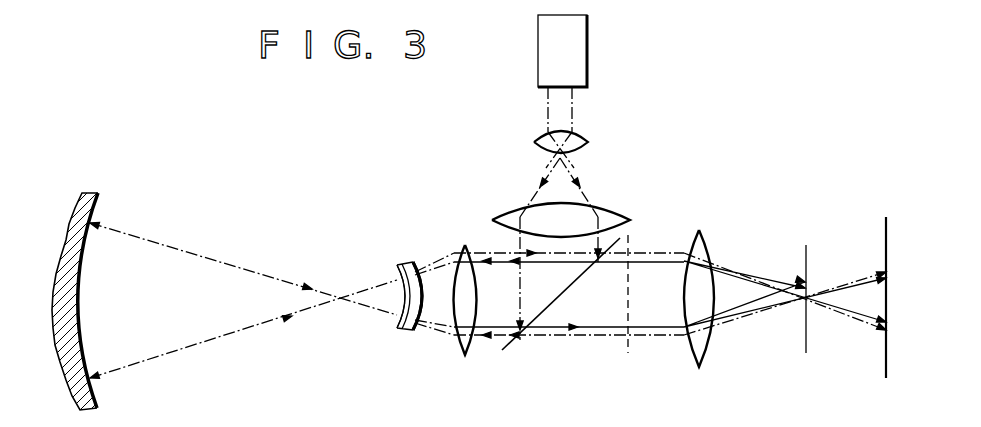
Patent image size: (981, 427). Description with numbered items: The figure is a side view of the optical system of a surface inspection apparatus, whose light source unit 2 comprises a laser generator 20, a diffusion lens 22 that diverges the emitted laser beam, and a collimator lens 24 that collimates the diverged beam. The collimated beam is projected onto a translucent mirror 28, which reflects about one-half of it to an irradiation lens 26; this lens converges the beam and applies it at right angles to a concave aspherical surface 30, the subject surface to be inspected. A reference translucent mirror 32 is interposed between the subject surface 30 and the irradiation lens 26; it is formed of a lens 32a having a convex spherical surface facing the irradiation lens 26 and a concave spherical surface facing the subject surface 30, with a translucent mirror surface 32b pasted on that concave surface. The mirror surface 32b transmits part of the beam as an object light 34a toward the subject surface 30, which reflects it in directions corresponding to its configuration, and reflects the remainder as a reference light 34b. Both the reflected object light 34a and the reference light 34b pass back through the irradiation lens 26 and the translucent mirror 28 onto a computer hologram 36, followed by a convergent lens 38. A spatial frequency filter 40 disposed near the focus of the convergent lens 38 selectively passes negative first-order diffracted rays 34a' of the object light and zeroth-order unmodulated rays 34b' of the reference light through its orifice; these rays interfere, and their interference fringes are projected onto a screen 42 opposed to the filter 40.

The light source unit 2 is at (590, 172).
The laser generator 20 is at (588, 27).
The diffusion lens 22 is at (585, 135).
The collimator lens 24 is at (508, 212).
The irradiation lens 26 is at (470, 349).
The translucent mirror 28 is at (517, 350).
The concave aspherical surface 30 is at (82, 322).
The reference translucent mirror 32 is at (385, 260).
The lens 32a is at (410, 329).
The translucent mirror surface 32b is at (395, 325).
The object light 34a is at (243, 303).
The reference light 34b is at (431, 302).
The negative first-order diffracted rays 34a' is at (670, 289).
The zeroth-order diffracted rays 34b' is at (670, 291).
The computer hologram 36 is at (627, 353).
The convergent lens 38 is at (701, 229).
The spatial frequency filter 40 is at (806, 265).
The screen 42 is at (888, 250).